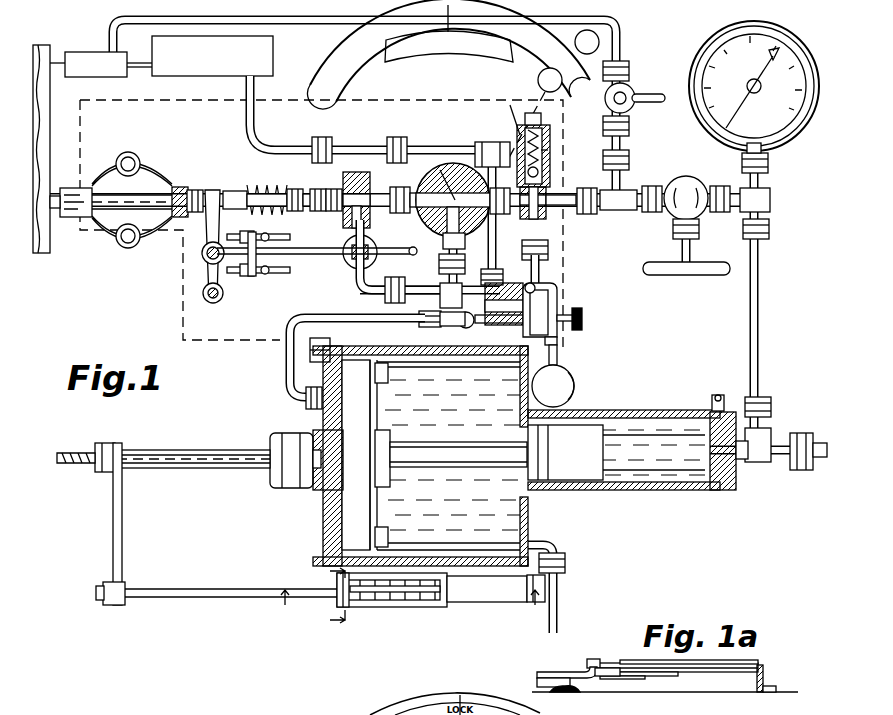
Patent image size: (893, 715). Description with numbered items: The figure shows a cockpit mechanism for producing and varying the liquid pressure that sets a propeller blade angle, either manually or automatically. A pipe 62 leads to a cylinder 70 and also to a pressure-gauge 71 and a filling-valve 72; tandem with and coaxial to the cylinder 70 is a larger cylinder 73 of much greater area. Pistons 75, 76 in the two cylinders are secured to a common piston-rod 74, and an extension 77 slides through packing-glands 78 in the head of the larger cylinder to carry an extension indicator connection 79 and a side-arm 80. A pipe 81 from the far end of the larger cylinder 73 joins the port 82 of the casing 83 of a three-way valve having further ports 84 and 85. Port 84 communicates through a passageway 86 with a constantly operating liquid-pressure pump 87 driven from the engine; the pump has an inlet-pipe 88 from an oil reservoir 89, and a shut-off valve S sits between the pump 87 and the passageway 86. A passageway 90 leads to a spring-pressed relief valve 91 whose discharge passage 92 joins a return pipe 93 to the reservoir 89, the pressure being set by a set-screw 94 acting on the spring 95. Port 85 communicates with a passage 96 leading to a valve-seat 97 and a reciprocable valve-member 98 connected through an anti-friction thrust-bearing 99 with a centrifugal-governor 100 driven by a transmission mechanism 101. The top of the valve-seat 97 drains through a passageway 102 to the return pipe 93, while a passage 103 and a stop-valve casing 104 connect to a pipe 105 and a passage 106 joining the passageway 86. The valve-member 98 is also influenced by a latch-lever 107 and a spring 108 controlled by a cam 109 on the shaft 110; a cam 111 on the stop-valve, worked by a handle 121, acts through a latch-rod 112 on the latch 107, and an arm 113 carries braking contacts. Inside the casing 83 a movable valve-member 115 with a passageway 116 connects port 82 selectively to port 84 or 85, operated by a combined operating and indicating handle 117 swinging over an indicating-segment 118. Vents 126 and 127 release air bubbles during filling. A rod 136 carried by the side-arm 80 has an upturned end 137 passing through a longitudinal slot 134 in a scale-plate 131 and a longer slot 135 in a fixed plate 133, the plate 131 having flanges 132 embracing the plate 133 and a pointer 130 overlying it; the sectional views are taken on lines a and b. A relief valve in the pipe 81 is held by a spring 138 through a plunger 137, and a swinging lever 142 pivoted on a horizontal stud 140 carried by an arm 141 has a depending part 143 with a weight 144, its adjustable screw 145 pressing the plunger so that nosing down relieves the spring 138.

In FIG. 1, the pipe 62 is at (812, 470).
In FIG. 1, the cylinder 70 is at (660, 490).
In FIG. 1, the pressure-gauge 71 is at (745, 112).
In FIG. 1, the filling-valve 72 is at (688, 178).
In FIG. 1, the larger cylinder 73 is at (478, 360).
In FIG. 1, the piston-rod 74 is at (460, 468).
In FIG. 1, the piston 75 is at (570, 452).
In FIG. 1, the piston 76 is at (365, 497).
In FIG. 1, the extension 77 is at (203, 468).
In FIG. 1, the packing-glands 78 is at (283, 488).
In FIG. 1, the extension indicator connection 79 is at (70, 466).
In FIG. 1, the side-arm 80 is at (113, 545).
In FIG. 1, the pipe 81 is at (286, 350).
In FIG. 1, the port 82 is at (465, 241).
In FIG. 1, the casing 83 is at (455, 165).
In FIG. 1, the port 84 is at (506, 214).
In FIG. 1, the port 85 is at (425, 240).
In FIG. 1, the passageway 86 is at (590, 214).
In FIG. 1, the liquid-pressure pump 87 is at (113, 76).
In FIG. 1, the inlet-pipe 88 is at (140, 68).
In FIG. 1, the oil reservoir 89 is at (221, 74).
In FIG. 1, the passageway 90 is at (556, 195).
In FIG. 1, the spring-pressed relief valve 91 is at (546, 182).
In FIG. 1, the discharge passage 92 is at (500, 150).
In FIG. 1, the pipe 93 is at (262, 135).
In FIG. 1, the set-screw 94 is at (541, 122).
In FIG. 1, the spring 95 is at (548, 152).
In FIG. 1, the passage 96 is at (400, 188).
In FIG. 1, the valve-seat 97 is at (413, 207).
In FIG. 1, the reciprocable valve-member 98 is at (335, 212).
In FIG. 1, the anti-friction thrust-bearing 99 is at (195, 188).
In FIG. 1, the centrifugal-governor 100 is at (132, 160).
In FIG. 1, the transmission mechanism 101 is at (47, 158).
In FIG. 1, the passageway 102 is at (343, 177).
In FIG. 1, the passage 103 is at (343, 236).
In FIG. 1, the stop-valve casing 104 is at (360, 280).
In FIG. 1, the pipe 105 is at (542, 275).
In FIG. 1, the passage 106 is at (550, 238).
In FIG. 1, the latch-lever 107 is at (205, 220).
In FIG. 1, the spring 108 is at (268, 185).
In FIG. 1, the cam 109 is at (285, 212).
In FIG. 1, the shaft 110 is at (305, 210).
In FIG. 1, the cam 111 is at (330, 260).
In FIG. 1, the latch-rod 112 is at (300, 254).
In FIG. 1, the arm 113 is at (252, 277).
In FIG. 1, the movable valve-member 115 is at (440, 170).
In FIG. 1, the passageway 116 is at (440, 256).
In FIG. 1, the combined operating and indicating handle 117 is at (513, 120).
In FIG. 1, the indicating-segment 118 is at (372, 48).
In FIG. 1, the handle 121 is at (413, 255).
In FIG. 1, the relief vent 126 is at (728, 388).
In FIG. 1, the vent 127 is at (330, 345).
In FIG. 1, the pointer 130 is at (364, 600).
In FIG. 1A, the pointer 130 is at (592, 660).
In FIG. 1, the scale-plate 131 is at (400, 607).
In FIG. 1A, the scale-plate 131 is at (690, 664).
In FIG. 1A, the flanges 132 is at (675, 675).
In FIG. 1, the plate 133 is at (490, 602).
In FIG. 1, the longitudinal slot 134 is at (425, 595).
In FIG. 1A, the longitudinal slot 134 is at (630, 660).
In FIG. 1, the slot 135 is at (440, 320).
In FIG. 1A, the slot 135 is at (640, 678).
In FIG. 1, the rod 136 is at (500, 262).
In FIG. 1A, the rod 136 is at (580, 684).
In FIG. 1, the upturned end 137 is at (560, 340).
In FIG. 1A, the upturned end 137 is at (620, 686).
In FIG. 1, the spring 138 is at (464, 328).
In FIG. 1, the horizontal stud 140 is at (560, 300).
In FIG. 1, the arm 141 is at (545, 285).
In FIG. 1, the swinging lever 142 is at (584, 317).
In FIG. 1, the depending part 143 is at (557, 352).
In FIG. 1, the weight 144 is at (574, 384).
In FIG. 1, the adjustable screw 145 is at (575, 322).
In FIG. 1, the shut-off valve S is at (633, 107).
In FIG. 1, the section line a is at (410, 606).
In FIG. 1, the section line b is at (330, 596).